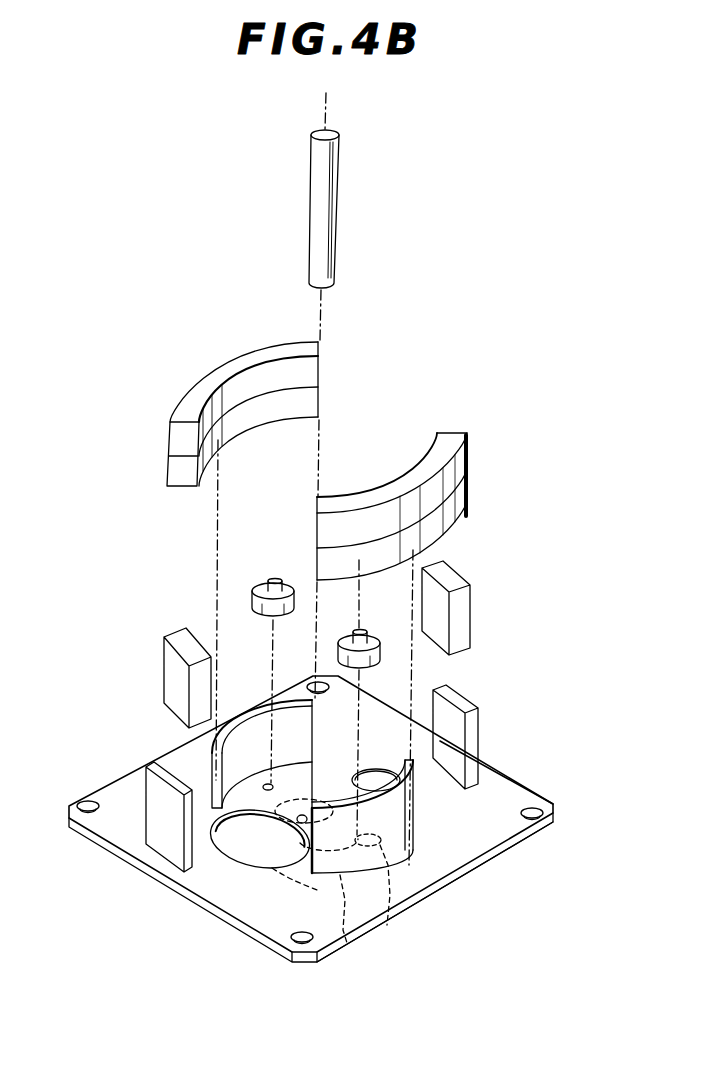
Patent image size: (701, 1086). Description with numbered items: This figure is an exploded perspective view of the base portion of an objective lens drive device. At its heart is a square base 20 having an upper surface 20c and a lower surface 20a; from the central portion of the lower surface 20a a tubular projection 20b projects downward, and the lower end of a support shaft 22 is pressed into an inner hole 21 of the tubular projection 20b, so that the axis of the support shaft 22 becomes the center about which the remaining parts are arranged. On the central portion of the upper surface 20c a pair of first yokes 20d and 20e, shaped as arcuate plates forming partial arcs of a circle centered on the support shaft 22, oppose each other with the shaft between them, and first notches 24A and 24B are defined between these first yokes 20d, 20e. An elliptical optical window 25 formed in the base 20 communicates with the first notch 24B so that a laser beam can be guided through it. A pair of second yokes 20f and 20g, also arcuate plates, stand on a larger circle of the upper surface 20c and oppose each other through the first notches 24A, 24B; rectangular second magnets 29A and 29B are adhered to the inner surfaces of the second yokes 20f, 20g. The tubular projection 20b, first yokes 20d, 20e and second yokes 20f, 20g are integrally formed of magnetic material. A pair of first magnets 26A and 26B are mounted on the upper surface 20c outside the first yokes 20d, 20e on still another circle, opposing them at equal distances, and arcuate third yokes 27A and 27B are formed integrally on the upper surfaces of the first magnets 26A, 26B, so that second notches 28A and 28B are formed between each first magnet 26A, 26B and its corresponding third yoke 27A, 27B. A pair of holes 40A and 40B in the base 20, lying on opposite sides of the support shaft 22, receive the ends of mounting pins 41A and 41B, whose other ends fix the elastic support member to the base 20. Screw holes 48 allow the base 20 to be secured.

The base 20 is at (528, 758).
The lower surface 20a is at (428, 872).
The tubular projection 20b is at (347, 943).
The upper surface 20c is at (477, 850).
The first yoke 20d is at (407, 800).
The first yoke 20e is at (248, 715).
The second yoke 20f is at (467, 703).
The second yoke 20g is at (162, 842).
The inner hole 21 is at (298, 822).
The support shaft 22 is at (325, 218).
The first notch 24A is at (375, 740).
The first notch 24B is at (252, 858).
The optical window 25 is at (247, 826).
The first magnet 26A is at (450, 521).
The first magnet 26B is at (233, 428).
The third yoke 27A is at (453, 480).
The third yoke 27B is at (200, 378).
The second notch 28A is at (373, 403).
The second notch 28B is at (242, 508).
The second magnet 29A is at (460, 605).
The second magnet 29B is at (163, 668).
The hole 40A is at (388, 897).
The hole 40B is at (263, 787).
The mounting pin 41A is at (363, 631).
The mounting pin 41B is at (258, 582).
The screw holes 48 is at (87, 806).